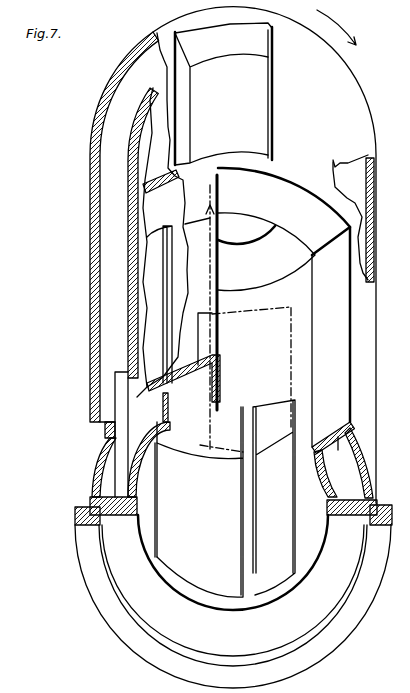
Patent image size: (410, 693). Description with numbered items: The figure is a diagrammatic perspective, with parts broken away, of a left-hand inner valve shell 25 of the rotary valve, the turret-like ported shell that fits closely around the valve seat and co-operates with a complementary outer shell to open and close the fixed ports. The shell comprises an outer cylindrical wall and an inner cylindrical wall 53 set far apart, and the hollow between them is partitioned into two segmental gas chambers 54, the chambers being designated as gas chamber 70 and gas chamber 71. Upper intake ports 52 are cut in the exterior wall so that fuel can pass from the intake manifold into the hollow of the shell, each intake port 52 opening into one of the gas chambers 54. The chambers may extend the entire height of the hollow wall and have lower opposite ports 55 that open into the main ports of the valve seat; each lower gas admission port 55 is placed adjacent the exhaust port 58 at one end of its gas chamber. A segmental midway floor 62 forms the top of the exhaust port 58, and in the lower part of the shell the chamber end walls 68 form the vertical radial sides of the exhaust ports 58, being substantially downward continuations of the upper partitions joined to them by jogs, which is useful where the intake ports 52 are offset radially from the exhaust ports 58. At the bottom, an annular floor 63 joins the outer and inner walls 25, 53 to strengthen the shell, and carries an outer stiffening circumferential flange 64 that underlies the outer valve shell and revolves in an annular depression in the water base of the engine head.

The inner valve shell 25 is at (86, 300).
The upper intake port 52 is at (273, 135).
The inner cylindrical wall 53 is at (327, 497).
The segmental gas chamber 54 is at (103, 233).
The lower opposite port 55 is at (169, 415).
The exhaust port 58 is at (217, 193).
The midway floor 62 is at (266, 245).
The bottom floor 63 is at (352, 502).
The outer stiffening circumferential flange 64 is at (233, 606).
The chamber end wall 68 is at (219, 375).
The gas chamber 70 is at (129, 49).
The gas chamber 71 is at (283, 101).